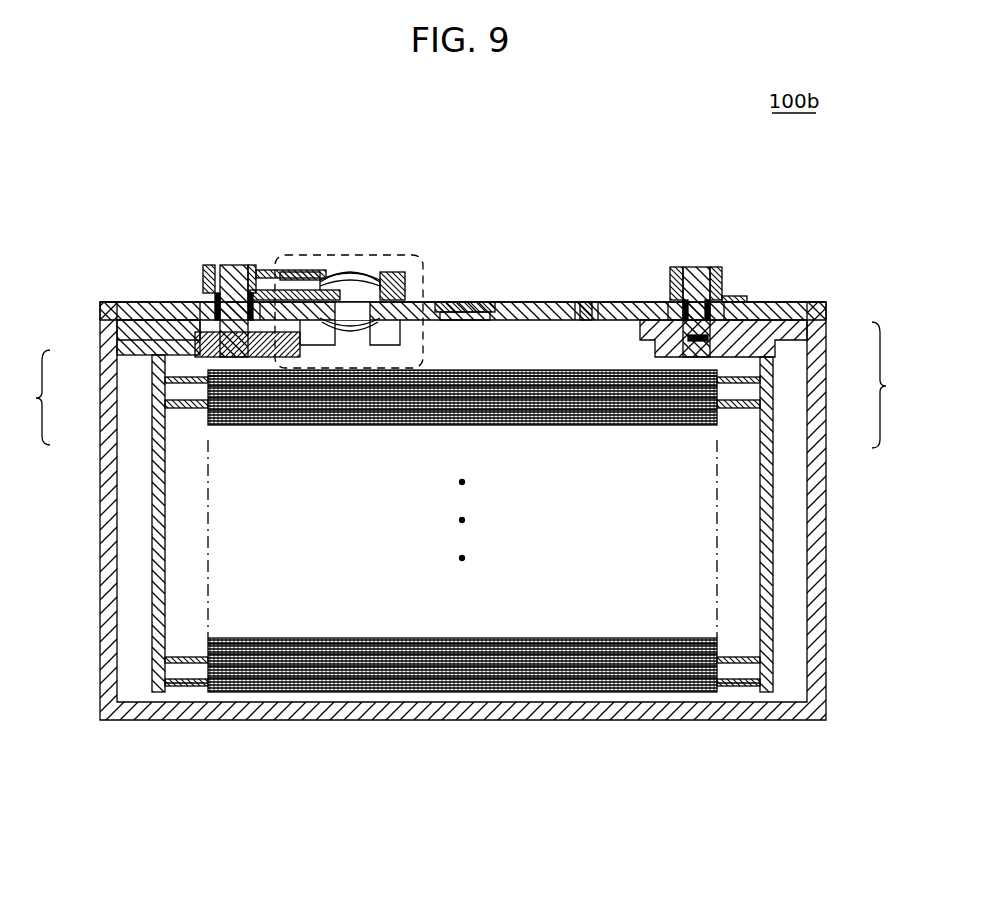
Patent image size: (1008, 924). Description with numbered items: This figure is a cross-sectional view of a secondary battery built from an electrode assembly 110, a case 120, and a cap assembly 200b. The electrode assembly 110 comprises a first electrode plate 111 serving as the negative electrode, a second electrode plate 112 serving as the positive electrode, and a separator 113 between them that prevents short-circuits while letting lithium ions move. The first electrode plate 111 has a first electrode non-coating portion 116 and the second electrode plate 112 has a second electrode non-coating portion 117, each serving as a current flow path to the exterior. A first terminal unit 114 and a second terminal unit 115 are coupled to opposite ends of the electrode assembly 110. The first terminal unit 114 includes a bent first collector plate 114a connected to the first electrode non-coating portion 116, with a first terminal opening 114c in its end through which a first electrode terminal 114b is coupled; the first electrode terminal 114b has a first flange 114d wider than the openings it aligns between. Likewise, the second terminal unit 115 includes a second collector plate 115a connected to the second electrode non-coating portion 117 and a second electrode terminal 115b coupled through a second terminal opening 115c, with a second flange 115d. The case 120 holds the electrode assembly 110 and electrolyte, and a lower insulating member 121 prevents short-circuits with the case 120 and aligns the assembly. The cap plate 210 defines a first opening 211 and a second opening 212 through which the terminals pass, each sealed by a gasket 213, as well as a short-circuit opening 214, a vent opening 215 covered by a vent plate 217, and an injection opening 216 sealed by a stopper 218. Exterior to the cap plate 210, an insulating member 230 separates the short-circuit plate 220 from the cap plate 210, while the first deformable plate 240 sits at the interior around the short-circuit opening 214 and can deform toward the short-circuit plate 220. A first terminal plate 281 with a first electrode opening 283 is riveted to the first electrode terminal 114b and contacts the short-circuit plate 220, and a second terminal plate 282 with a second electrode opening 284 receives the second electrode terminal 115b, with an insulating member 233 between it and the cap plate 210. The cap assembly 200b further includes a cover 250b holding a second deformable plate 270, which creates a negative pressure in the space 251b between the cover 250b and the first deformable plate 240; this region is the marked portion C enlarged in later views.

The electrode assembly 110 is at (544, 712).
The first electrode plate 111 is at (286, 692).
The second electrode plate 112 is at (648, 692).
The separator 113 is at (462, 692).
The first terminal unit 114 is at (25, 397).
The first collector plate 114a is at (152, 426).
The first electrode terminal 114b is at (122, 355).
The first terminal opening 114c is at (222, 390).
The first flange 114d is at (250, 408).
The second terminal unit 115 is at (895, 385).
The second collector plate 115a is at (773, 430).
The second electrode terminal 115b is at (760, 340).
The second terminal opening 115c is at (698, 410).
The second flange 115d is at (745, 300).
The first electrode non-coating portion 116 is at (184, 692).
The second electrode non-coating portion 117 is at (740, 692).
The case 120 is at (826, 518).
The lower insulating member 121 is at (125, 328).
The cap assembly 200b is at (557, 290).
The cap plate 210 is at (533, 302).
The first opening 211 is at (190, 300).
The second opening 212 is at (667, 302).
The gasket 213 is at (248, 330).
The short-circuit opening 214 is at (338, 346).
The vent opening 215 is at (468, 320).
The injection opening 216 is at (584, 320).
The vent plate 217 is at (490, 302).
The stopper 218 is at (588, 302).
The short-circuit plate 220 is at (300, 290).
The insulating member 230 is at (262, 360).
The insulating member 233 is at (672, 300).
The first deformable plate 240 is at (372, 346).
The cover 250b is at (392, 270).
The space 251b is at (330, 326).
The second deformable plate 270 is at (352, 255).
The marked portion C is at (370, 258).
The first terminal plate 281 is at (209, 265).
The second terminal plate 282 is at (716, 267).
The first electrode opening 283 is at (262, 270).
The second electrode opening 284 is at (722, 300).